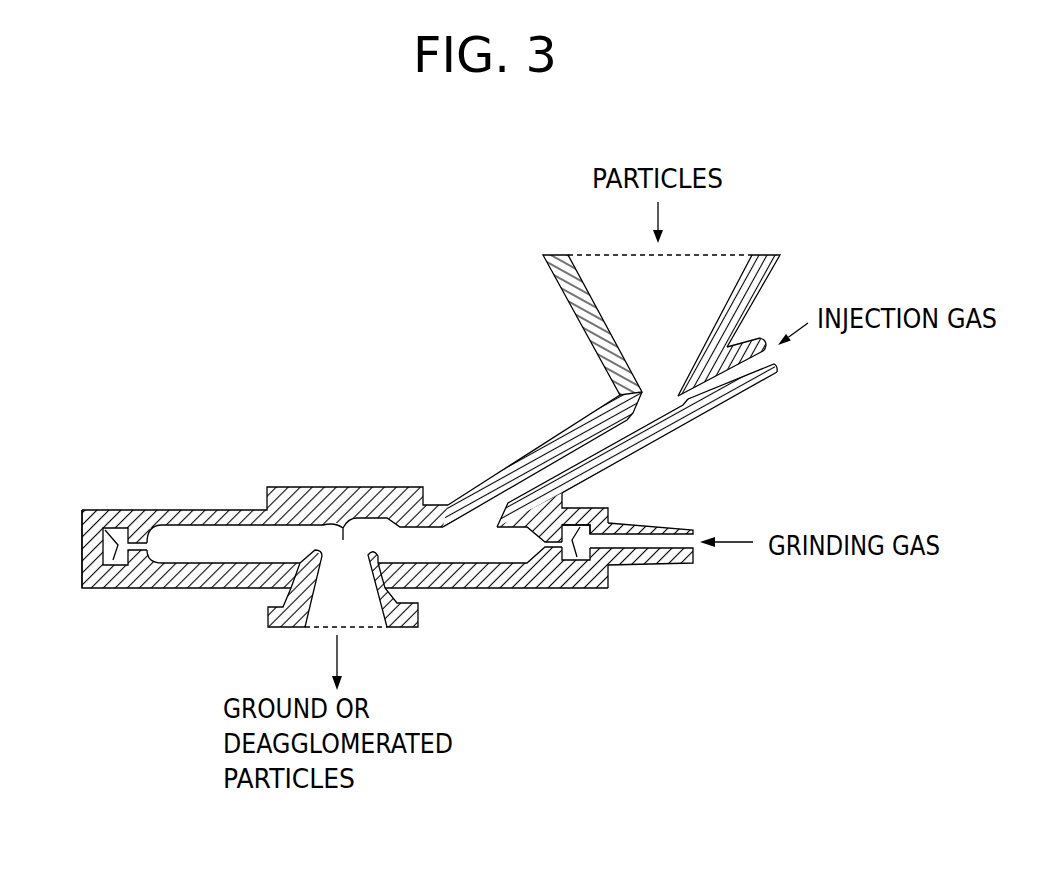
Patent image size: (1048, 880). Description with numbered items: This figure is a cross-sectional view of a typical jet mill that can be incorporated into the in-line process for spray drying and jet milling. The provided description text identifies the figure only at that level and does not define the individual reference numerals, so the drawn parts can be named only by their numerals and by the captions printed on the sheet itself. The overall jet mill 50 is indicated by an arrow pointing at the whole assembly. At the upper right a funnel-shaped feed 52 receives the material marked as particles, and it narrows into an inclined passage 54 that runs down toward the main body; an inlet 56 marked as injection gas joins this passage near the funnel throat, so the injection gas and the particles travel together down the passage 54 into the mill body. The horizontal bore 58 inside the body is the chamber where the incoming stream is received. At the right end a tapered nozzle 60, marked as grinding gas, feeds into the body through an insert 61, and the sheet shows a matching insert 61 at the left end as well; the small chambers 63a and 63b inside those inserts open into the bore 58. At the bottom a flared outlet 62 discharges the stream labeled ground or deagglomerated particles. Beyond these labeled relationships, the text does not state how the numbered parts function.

The jet mill / grinding apparatus 50 is at (242, 257).
The particle feed hopper 52 is at (690, 282).
The injection tube 54 is at (643, 443).
The injection gas inlet 56 is at (767, 350).
The grinding chamber / channel 58 is at (233, 547).
The grinding gas nozzle 60 is at (628, 540).
The nozzle insert 61 is at (97, 510).
The outlet 62 is at (358, 603).
The nozzle opening 63a is at (120, 552).
The nozzle opening 63b is at (582, 560).